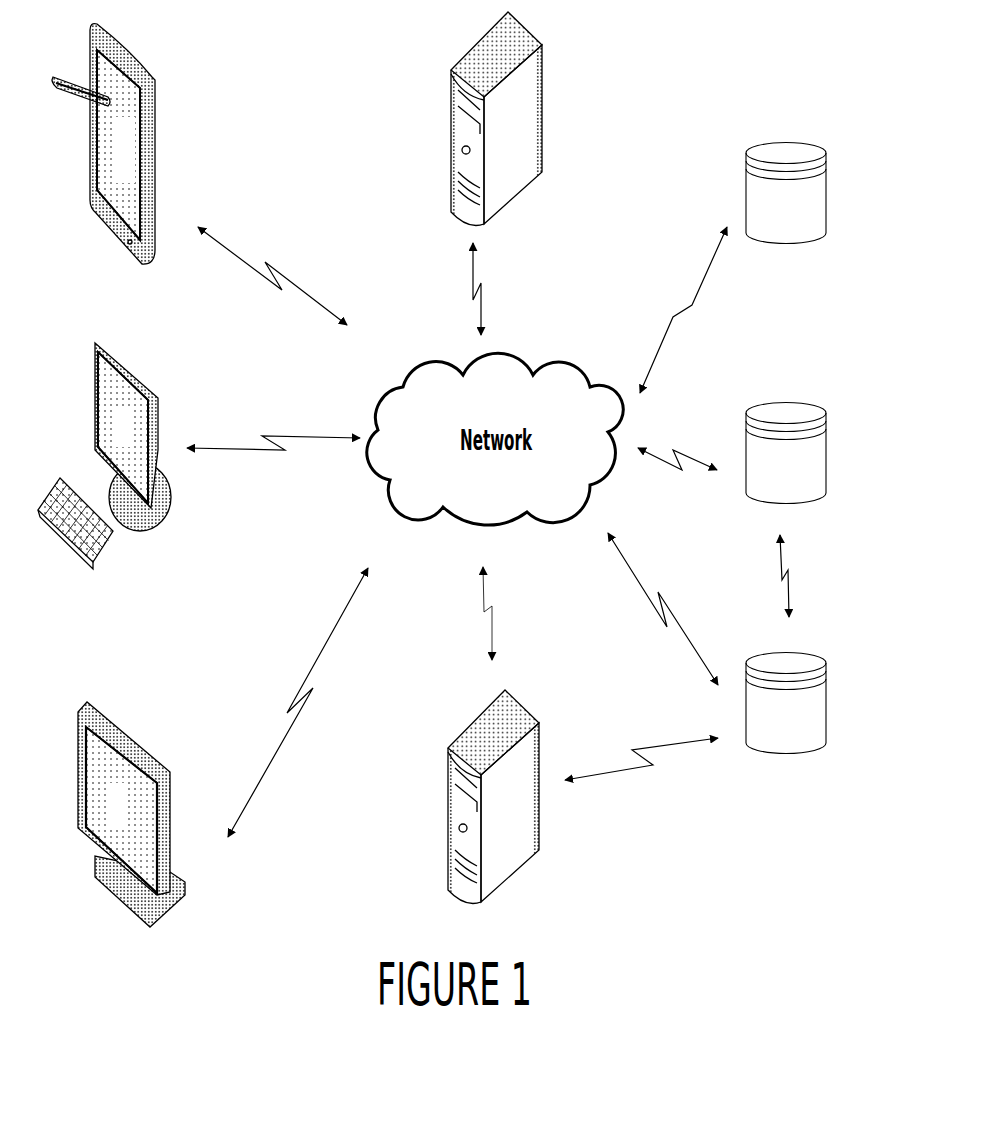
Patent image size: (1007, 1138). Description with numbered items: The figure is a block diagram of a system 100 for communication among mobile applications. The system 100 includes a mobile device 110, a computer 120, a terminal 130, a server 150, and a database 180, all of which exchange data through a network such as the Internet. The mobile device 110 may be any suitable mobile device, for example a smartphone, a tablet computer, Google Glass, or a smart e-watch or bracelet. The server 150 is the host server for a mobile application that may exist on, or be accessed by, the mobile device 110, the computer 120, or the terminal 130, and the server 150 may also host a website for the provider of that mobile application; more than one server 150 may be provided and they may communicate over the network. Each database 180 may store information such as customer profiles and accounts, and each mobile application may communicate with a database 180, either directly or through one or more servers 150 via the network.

The system 100 is at (730, 88).
The mobile device 110 is at (103, 161).
The computer 120 is at (104, 469).
The terminal 130 is at (131, 831).
The server 150 is at (495, 475).
The database 180 is at (800, 224).